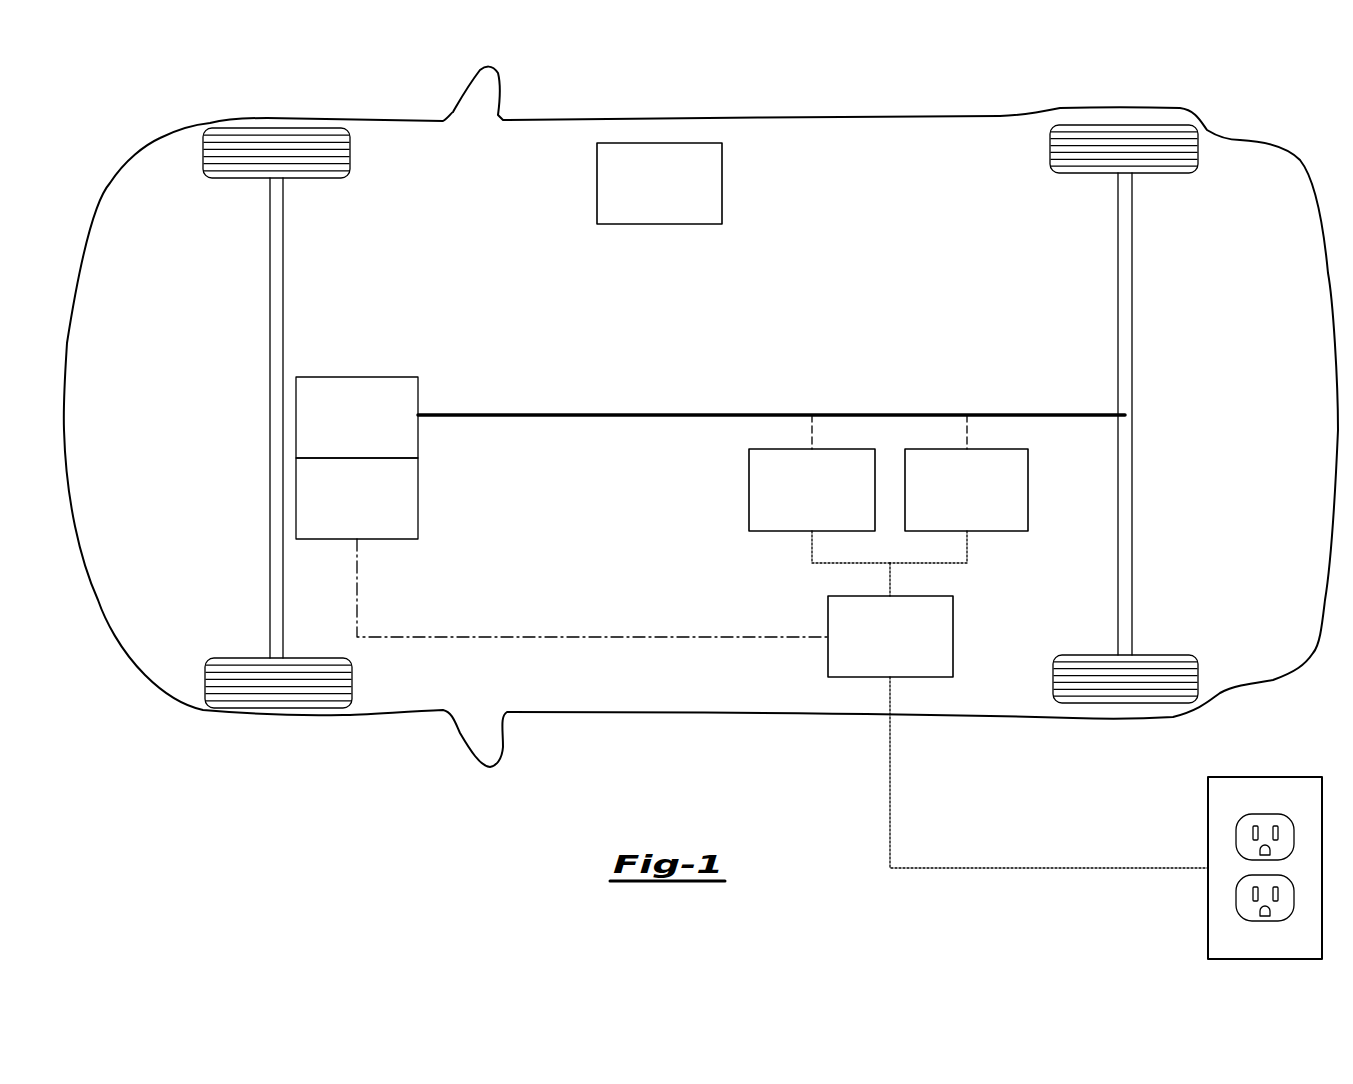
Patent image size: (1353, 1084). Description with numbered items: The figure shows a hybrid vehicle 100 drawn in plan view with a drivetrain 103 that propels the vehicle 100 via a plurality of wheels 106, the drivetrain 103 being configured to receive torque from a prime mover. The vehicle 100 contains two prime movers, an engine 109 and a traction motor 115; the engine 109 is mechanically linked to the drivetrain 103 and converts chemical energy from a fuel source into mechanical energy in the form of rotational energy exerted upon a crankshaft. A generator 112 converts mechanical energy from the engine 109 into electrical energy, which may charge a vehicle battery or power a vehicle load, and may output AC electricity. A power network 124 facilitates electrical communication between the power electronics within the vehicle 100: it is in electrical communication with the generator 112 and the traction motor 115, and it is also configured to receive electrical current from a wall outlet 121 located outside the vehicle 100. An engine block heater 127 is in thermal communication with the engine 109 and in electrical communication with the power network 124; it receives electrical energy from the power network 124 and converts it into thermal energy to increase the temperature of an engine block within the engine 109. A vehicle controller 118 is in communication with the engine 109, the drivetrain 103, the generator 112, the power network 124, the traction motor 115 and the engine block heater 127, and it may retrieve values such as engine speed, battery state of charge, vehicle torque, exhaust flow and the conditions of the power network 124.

The vehicle 100 is at (741, 113).
The drivetrain 103 is at (735, 413).
The wheels 106 is at (277, 128).
The engine 109 is at (356, 377).
The generator 112 is at (748, 492).
The traction motor 115 is at (1030, 490).
The vehicle controller 118 is at (660, 225).
The wall outlet 121 is at (1208, 832).
The power network 124 is at (955, 634).
The engine block heater 127 is at (420, 497).